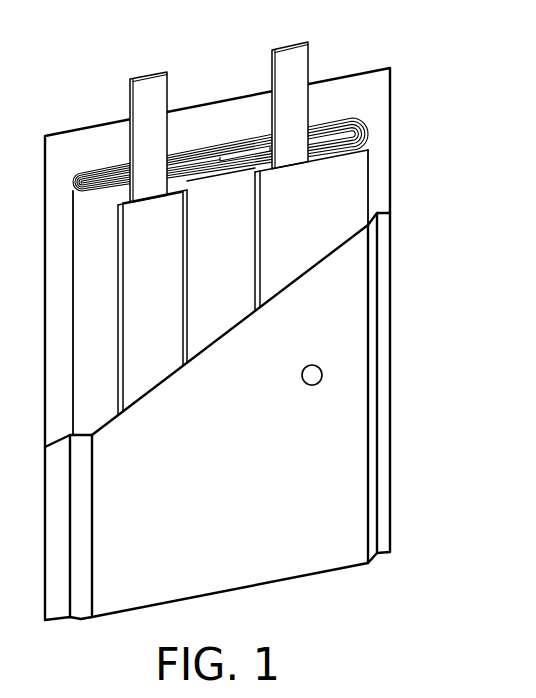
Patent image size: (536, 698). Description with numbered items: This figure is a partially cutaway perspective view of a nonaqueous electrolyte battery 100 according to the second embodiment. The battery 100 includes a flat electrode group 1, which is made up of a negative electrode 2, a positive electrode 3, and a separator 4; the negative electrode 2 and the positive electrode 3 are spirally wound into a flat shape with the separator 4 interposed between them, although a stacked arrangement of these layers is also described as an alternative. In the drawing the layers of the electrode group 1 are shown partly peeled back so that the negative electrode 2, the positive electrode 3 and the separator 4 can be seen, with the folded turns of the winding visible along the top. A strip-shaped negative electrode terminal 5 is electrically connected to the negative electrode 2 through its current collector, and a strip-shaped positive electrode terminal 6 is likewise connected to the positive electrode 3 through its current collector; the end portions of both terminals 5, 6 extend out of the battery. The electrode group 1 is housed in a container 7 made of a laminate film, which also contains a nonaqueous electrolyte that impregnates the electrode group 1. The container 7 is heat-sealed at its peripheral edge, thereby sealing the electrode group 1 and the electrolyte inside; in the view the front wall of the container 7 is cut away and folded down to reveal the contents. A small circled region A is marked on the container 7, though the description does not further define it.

The nonaqueous electrolyte battery 100 is at (421, 75).
The flat electrode group 1 is at (279, 217).
The negative electrode 2 is at (452, 278).
The positive electrode 3 is at (153, 267).
The separator 4 is at (230, 221).
The negative electrode terminal 5 is at (290, 63).
The positive electrode terminal 6 is at (146, 88).
The container 7 is at (345, 453).
The region A is at (322, 373).